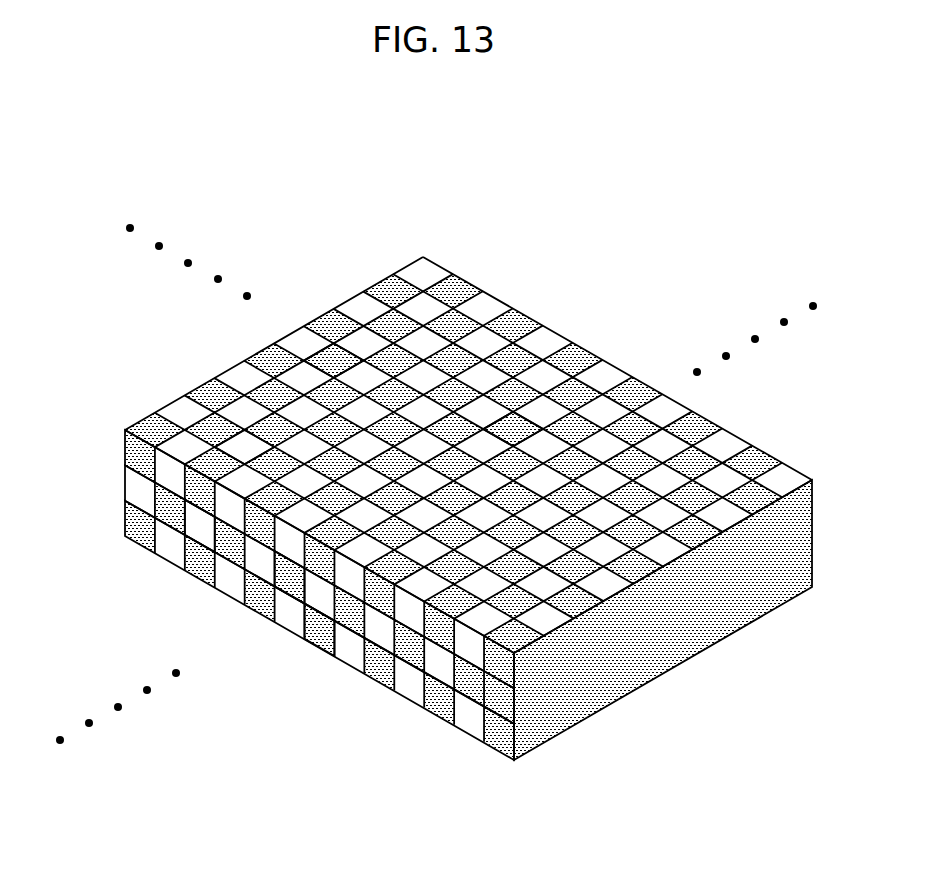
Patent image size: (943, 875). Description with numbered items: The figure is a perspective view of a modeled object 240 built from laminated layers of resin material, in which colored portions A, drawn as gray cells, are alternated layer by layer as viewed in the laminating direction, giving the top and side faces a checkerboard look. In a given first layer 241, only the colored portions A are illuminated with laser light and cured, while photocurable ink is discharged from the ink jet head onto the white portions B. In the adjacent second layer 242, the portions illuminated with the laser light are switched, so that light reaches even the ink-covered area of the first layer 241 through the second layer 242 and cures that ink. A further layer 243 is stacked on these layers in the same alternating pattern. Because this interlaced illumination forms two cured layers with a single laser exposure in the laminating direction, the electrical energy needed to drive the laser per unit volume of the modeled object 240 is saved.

The modeled object 240 is at (406, 204).
The first layer 241 is at (121, 503).
The second layer 242 is at (121, 468).
The third layer 243 is at (121, 433).
The colored portions A is at (331, 322).
The white portions B is at (247, 443).